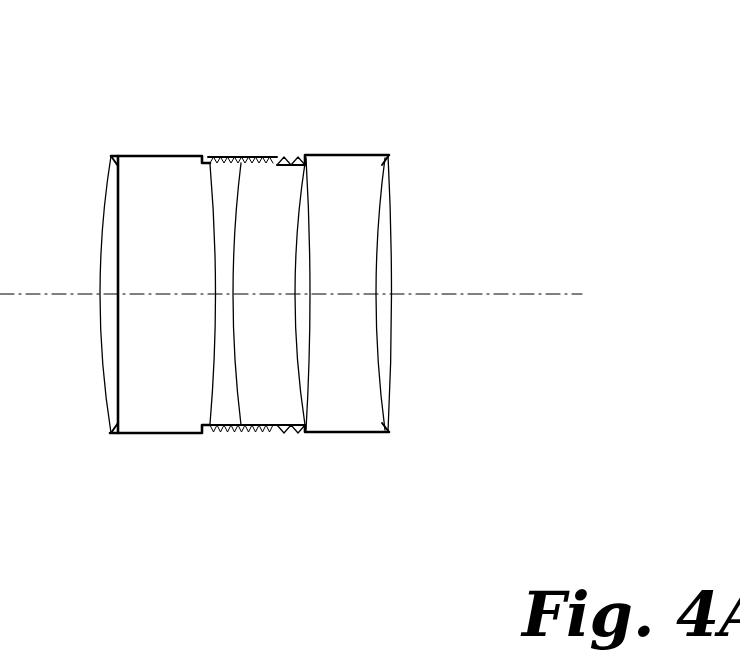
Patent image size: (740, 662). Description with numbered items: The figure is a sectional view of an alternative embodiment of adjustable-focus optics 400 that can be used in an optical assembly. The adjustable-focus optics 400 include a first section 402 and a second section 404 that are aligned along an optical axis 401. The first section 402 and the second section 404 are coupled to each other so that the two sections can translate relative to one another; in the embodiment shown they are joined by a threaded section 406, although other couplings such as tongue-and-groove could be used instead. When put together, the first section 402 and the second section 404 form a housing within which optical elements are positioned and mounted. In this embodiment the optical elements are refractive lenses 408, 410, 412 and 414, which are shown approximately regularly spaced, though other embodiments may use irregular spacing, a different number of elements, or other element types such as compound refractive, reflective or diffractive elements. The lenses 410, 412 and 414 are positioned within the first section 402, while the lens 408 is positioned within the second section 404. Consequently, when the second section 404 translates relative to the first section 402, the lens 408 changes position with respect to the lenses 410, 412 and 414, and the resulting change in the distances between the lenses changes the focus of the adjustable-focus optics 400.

The adjustable-focus optics 400 is at (557, 78).
The optical axis 401 is at (542, 294).
The first section 402 is at (385, 266).
The second section 404 is at (127, 267).
The threaded section 406 is at (246, 283).
The refractive lens 408 is at (107, 400).
The refractive lens 410 is at (207, 432).
The refractive lens 412 is at (303, 432).
The refractive lens 414 is at (389, 395).